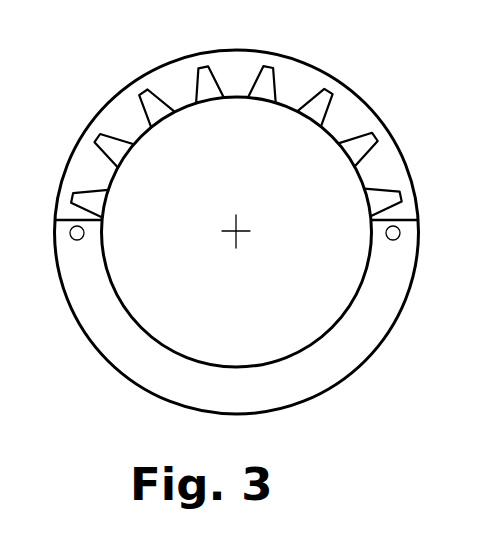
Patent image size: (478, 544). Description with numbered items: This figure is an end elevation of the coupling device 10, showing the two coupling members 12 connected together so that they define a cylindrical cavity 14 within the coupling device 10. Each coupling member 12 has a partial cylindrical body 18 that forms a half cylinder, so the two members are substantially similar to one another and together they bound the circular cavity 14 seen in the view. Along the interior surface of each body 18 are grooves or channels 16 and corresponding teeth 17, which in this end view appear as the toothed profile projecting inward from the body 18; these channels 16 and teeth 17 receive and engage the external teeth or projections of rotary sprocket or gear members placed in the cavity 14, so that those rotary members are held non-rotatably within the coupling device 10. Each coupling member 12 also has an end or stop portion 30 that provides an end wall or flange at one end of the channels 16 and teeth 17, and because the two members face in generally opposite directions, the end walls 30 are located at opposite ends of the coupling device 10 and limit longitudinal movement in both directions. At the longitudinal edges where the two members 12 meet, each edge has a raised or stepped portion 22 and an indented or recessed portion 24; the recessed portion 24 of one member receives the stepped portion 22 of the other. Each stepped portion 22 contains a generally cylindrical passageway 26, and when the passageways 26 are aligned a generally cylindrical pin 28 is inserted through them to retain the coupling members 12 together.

The coupling device 10 is at (330, 25).
The coupling member 12 is at (330, 61).
The cylindrical cavity 14 is at (242, 194).
The grooves 16 is at (203, 63).
The teeth 17 is at (182, 100).
The partial cylindrical body 18 is at (344, 88).
The raised or stepped portion 22 is at (99, 221).
The recessed portion 24 is at (72, 208).
The cylindrical passageway 26 is at (84, 238).
The pin 28 is at (103, 226).
The end or stop portion 30 is at (317, 117).